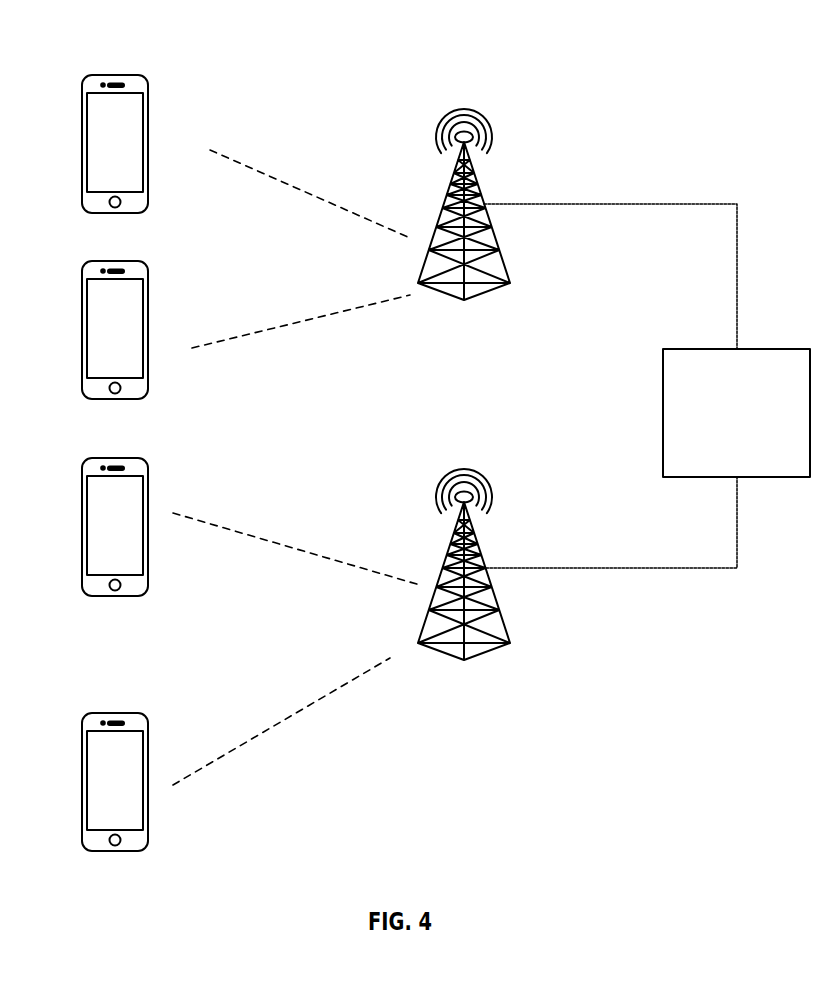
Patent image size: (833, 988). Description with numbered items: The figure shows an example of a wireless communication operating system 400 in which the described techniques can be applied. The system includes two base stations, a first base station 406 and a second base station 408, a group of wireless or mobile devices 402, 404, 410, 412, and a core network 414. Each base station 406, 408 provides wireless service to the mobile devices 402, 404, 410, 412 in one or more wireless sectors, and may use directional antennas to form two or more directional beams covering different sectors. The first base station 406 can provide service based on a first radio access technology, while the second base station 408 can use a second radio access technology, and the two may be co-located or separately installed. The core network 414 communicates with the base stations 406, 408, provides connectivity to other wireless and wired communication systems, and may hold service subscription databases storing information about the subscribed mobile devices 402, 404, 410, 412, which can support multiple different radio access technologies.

The wireless communication operating system 400 is at (602, 62).
The mobile device 402 is at (99, 157).
The mobile device 404 is at (99, 343).
The first base station 406 is at (449, 339).
The second base station 408 is at (449, 699).
The mobile device 410 is at (99, 540).
The mobile device 412 is at (99, 795).
The core network 414 is at (722, 457).